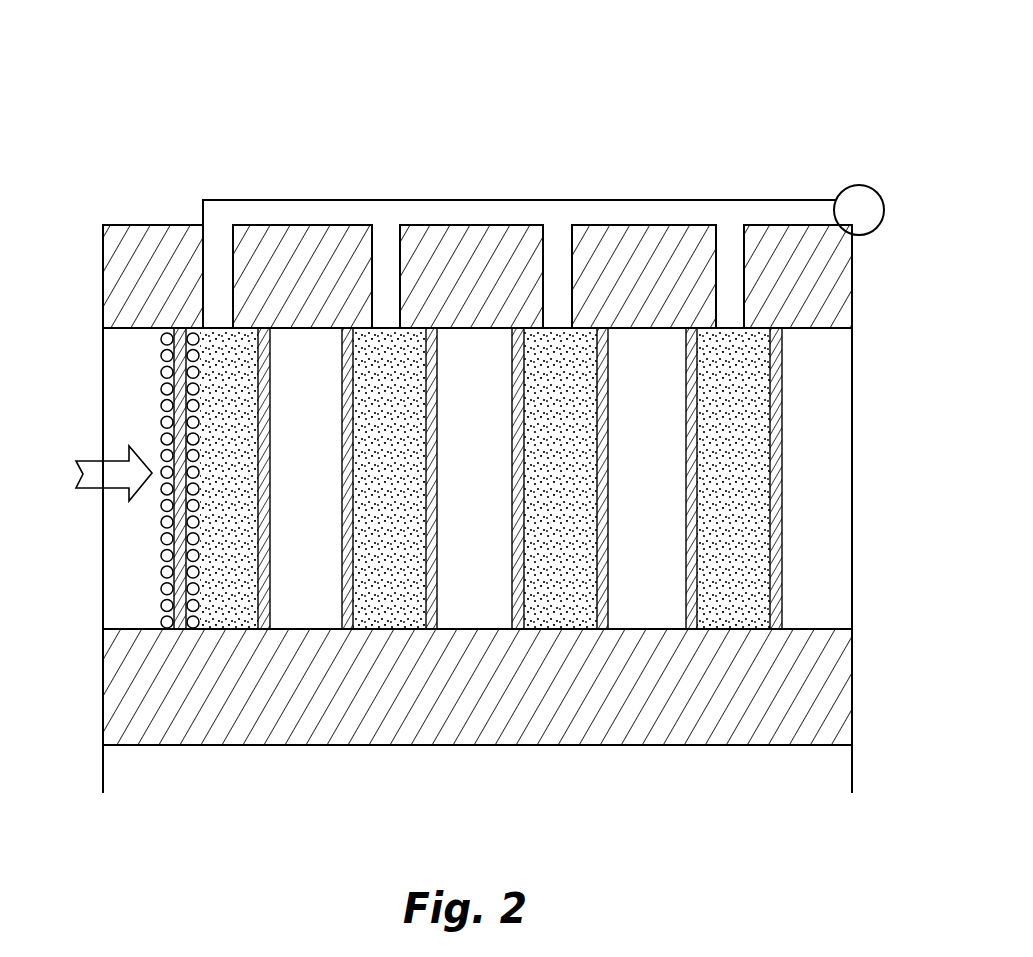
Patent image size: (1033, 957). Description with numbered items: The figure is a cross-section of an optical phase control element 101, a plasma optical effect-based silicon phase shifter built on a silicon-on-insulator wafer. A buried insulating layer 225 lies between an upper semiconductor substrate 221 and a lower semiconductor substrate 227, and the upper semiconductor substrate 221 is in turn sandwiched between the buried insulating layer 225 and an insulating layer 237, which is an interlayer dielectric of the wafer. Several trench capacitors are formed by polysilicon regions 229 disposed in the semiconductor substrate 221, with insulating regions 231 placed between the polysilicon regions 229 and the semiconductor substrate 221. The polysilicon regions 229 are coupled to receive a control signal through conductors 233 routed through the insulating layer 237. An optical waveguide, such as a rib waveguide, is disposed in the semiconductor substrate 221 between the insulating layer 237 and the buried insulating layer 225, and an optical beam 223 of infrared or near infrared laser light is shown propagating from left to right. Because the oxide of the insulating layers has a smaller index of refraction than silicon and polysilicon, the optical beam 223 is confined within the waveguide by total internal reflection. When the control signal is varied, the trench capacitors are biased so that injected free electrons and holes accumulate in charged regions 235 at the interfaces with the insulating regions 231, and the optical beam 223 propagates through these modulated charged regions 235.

The optical phase control element 101 is at (635, 80).
The semiconductor substrate 221 is at (110, 393).
The optical beam 223 is at (87, 460).
The buried insulating layer 225 is at (125, 678).
The semiconductor substrate 227 is at (128, 763).
The polysilicon regions 229 is at (243, 607).
The insulating regions 231 is at (173, 593).
The conductors 233 is at (445, 213).
The charged regions 235 is at (160, 356).
The insulating layer 237 is at (112, 302).